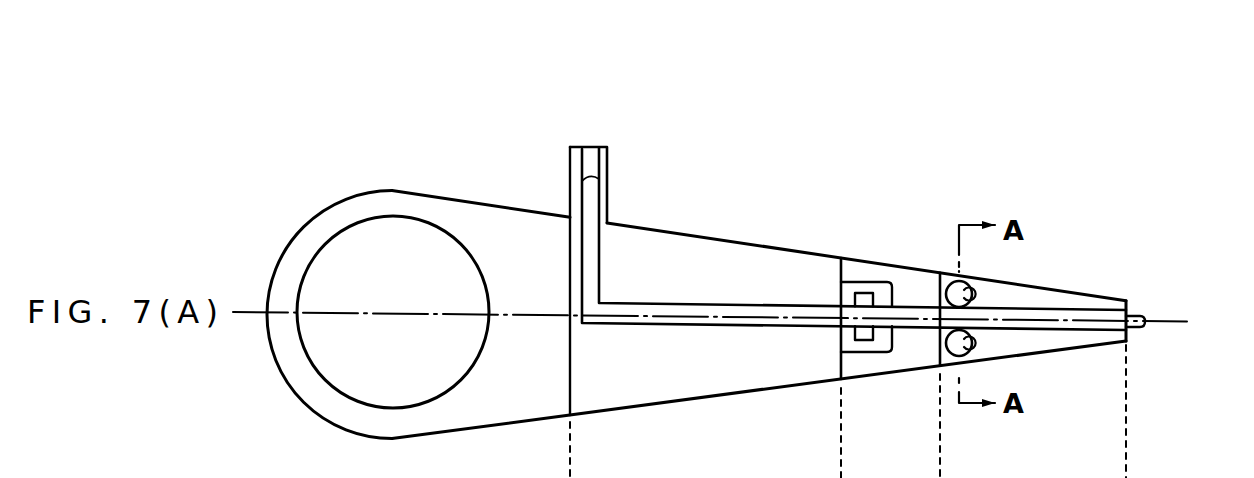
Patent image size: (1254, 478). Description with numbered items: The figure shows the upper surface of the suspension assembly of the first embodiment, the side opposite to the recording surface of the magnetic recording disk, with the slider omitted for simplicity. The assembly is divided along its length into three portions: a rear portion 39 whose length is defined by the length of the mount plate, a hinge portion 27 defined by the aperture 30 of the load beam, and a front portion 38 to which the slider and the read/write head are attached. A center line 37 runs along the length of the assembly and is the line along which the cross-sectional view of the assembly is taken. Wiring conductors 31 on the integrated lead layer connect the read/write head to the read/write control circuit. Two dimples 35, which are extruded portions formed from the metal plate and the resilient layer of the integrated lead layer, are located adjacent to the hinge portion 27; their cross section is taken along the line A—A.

The center line 37 is at (266, 304).
The rear portion 39 is at (841, 111).
The wiring conductors 31 is at (602, 188).
The hinge portion 27 is at (896, 155).
The aperture 30 is at (880, 346).
The dimples 35 is at (970, 286).
The front portion 38 is at (1126, 113).